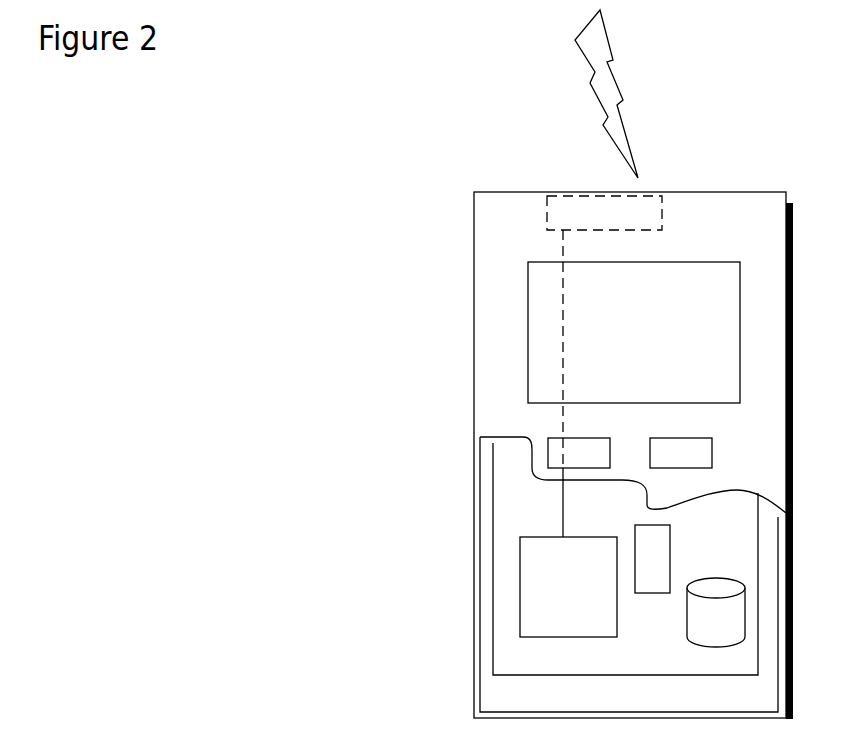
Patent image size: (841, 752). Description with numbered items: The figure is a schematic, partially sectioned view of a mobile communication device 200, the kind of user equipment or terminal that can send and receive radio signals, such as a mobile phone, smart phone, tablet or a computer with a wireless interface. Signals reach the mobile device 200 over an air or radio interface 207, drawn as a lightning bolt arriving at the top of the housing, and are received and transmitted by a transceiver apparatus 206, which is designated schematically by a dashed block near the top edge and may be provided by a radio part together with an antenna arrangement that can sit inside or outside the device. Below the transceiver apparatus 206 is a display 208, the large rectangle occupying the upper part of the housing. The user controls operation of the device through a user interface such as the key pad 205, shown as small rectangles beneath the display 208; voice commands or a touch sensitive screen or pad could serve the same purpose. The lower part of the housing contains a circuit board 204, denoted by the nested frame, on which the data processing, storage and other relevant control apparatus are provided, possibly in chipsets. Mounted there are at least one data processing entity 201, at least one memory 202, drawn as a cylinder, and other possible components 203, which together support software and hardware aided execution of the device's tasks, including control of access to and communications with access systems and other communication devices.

The communication device 200 is at (477, 235).
The data processing entity 201 is at (527, 569).
The memory 202 is at (707, 630).
The other possible components 203 is at (652, 543).
The circuit board 204 is at (520, 655).
The key pad 205 is at (552, 452).
The transceiver apparatus 206 is at (652, 207).
The air or radio interface 207 is at (637, 123).
The display 208 is at (547, 318).